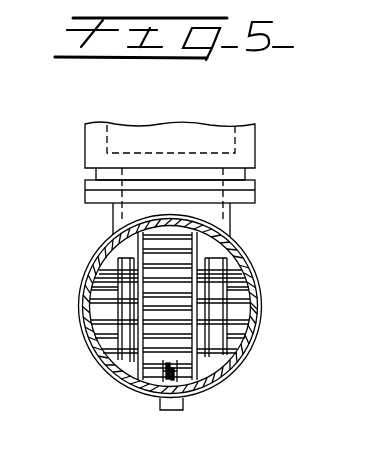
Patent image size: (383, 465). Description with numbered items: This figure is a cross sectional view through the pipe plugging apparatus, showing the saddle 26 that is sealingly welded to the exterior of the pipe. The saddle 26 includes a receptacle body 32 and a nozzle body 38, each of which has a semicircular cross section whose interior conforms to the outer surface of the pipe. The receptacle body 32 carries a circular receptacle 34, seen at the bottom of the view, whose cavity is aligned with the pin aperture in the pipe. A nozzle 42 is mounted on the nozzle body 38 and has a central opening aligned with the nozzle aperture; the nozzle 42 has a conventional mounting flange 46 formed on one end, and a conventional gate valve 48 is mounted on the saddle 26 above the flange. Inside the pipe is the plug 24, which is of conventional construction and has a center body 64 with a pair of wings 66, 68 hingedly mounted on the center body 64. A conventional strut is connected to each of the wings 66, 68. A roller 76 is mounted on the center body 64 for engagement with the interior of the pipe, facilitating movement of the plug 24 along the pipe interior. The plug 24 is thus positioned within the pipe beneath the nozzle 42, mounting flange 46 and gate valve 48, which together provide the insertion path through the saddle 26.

The gate valve 48 is at (85, 143).
The mounting flange 46 is at (87, 197).
The nozzle 42 is at (232, 221).
The saddle 26 is at (110, 226).
The plug 24 is at (239, 254).
The nozzle body 38 is at (250, 298).
The receptacle body 32 is at (217, 384).
The center body 64 is at (176, 308).
The wing 66 is at (115, 278).
The wing 68 is at (227, 325).
The roller 76 is at (155, 382).
The circular receptacle 34 is at (177, 408).